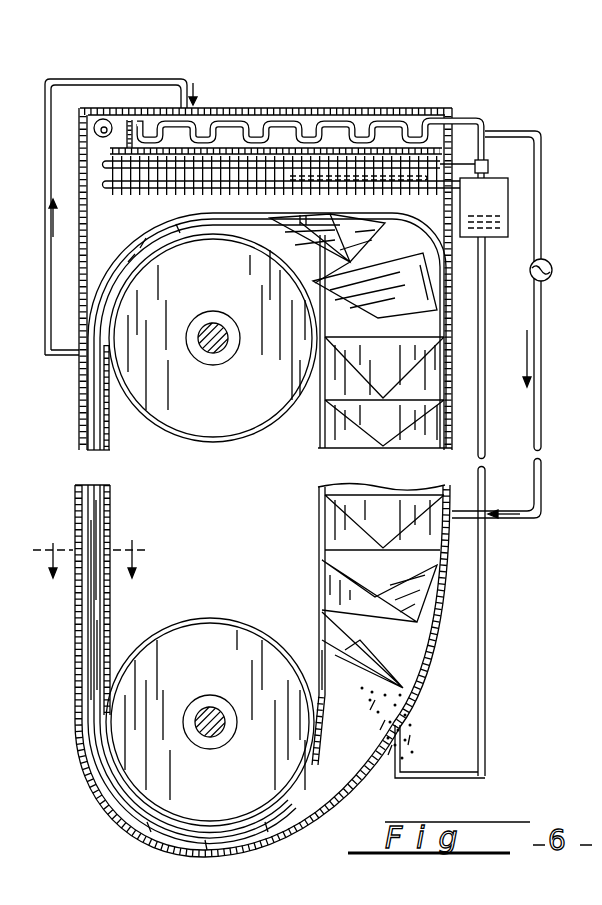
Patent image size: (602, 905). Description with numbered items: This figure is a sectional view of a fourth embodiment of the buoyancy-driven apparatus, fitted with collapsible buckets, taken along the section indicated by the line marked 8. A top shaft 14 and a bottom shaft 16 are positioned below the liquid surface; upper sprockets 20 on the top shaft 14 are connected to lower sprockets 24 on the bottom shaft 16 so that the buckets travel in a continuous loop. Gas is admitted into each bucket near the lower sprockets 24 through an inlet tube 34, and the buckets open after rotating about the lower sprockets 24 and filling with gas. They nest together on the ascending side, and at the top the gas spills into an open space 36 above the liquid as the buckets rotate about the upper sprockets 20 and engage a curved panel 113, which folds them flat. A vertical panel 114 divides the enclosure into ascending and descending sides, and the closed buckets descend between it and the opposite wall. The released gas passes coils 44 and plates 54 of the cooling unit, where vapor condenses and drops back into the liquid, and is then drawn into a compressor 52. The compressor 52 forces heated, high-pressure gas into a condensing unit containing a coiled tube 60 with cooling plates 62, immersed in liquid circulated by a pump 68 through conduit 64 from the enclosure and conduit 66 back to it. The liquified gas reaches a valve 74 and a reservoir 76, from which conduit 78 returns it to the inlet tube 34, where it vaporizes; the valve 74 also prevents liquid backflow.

The section line 8- 8 is at (89, 544).
The top shaft 14 is at (213, 347).
The bottom shaft 16 is at (213, 728).
The upper sprockets 20 is at (213, 338).
The lower sprockets 24 is at (210, 722).
The inlet tube 34 is at (432, 778).
The open space 36 is at (128, 221).
The coils 44 is at (484, 252).
The compressor 52 is at (100, 121).
The plates 54 is at (403, 195).
The coiled tube 60 is at (281, 118).
The cooling plates 62 is at (309, 123).
The conduit 64 is at (68, 173).
The conduit 66 is at (541, 436).
The pump 68 is at (552, 268).
The valve 74 is at (490, 166).
The reservoir 76 is at (510, 207).
The conduit 78 is at (485, 578).
The curved panel 113 is at (152, 232).
The vertical panel 114 is at (110, 420).